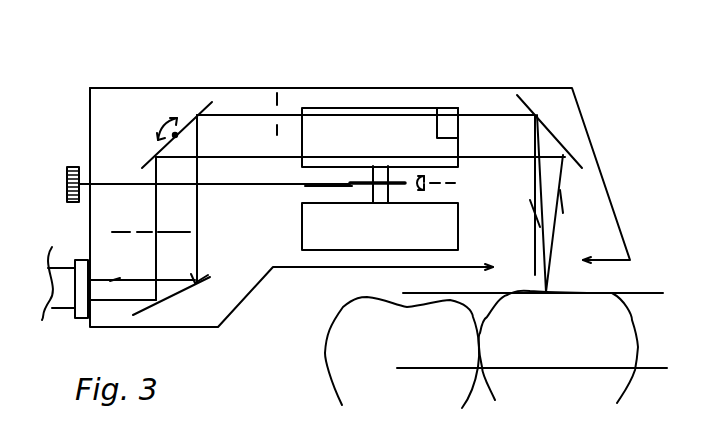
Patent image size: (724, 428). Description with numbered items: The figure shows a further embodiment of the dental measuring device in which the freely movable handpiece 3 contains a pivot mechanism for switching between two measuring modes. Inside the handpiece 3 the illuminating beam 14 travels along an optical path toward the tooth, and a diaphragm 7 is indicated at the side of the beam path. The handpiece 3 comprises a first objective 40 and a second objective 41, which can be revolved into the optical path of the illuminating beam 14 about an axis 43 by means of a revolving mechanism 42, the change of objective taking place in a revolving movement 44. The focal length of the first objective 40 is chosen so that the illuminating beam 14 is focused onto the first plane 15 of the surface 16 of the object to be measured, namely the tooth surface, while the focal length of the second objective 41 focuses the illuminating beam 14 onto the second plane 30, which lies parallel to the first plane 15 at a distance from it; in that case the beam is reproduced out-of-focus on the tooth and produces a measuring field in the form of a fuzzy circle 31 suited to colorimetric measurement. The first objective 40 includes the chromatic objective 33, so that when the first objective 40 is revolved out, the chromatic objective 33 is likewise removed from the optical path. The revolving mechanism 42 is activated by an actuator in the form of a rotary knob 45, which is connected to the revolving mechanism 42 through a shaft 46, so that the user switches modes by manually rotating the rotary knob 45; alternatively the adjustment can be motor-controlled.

The handpiece 3 is at (531, 88).
The diaphragm 7 is at (117, 230).
The illuminating beam 14 is at (262, 115).
The first plane 15 is at (643, 291).
The surface of the object to be measured 16 is at (597, 293).
The second plane 30 is at (647, 367).
The fuzzy circle 31 is at (273, 91).
The chromatic objective 33 is at (455, 122).
The first objective 40 is at (344, 108).
The second objective 41 is at (325, 237).
The revolving mechanism 42 is at (350, 182).
The axis 43 is at (453, 183).
The revolving movement 44 is at (431, 176).
The rotary knob 45 is at (73, 165).
The shaft 46 is at (305, 186).